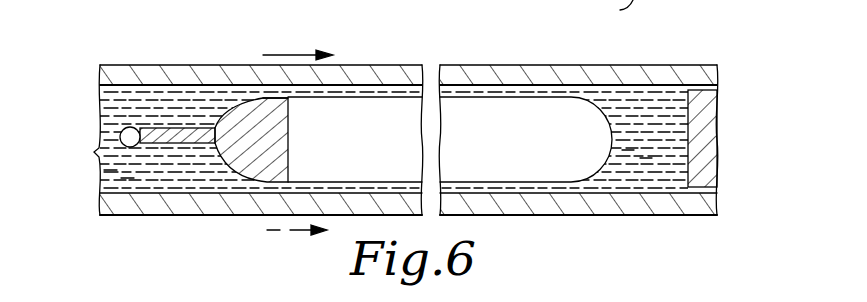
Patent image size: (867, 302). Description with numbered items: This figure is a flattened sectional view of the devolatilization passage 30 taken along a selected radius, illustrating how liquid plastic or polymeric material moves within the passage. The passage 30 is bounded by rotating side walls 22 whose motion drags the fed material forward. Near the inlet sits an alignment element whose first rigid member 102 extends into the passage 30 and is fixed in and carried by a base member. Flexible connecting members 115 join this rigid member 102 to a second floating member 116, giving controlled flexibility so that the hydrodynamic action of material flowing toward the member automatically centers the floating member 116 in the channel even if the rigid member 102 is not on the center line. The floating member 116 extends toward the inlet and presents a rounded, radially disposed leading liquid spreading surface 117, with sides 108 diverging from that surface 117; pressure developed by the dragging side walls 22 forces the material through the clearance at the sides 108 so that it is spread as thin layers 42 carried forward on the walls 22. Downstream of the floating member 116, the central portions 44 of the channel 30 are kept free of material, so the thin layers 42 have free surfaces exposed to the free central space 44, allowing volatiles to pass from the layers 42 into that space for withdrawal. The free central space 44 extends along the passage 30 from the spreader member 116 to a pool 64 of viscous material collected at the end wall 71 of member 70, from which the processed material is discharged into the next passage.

The channel side walls 22 is at (134, 90).
The flexible connecting members 115 is at (174, 137).
The liquid spreading surface 117 is at (243, 102).
The sides of liquid spreading member 108 is at (272, 98).
The central portions of the channel 44 is at (327, 120).
The thin layers 42 is at (375, 98).
The first rigid member 102 is at (122, 141).
The devolatilization passage 30 is at (117, 170).
The second floating member 116 is at (216, 146).
The member 70 is at (705, 134).
The pool of viscous material 64 is at (633, 155).
The end wall 71 is at (685, 160).